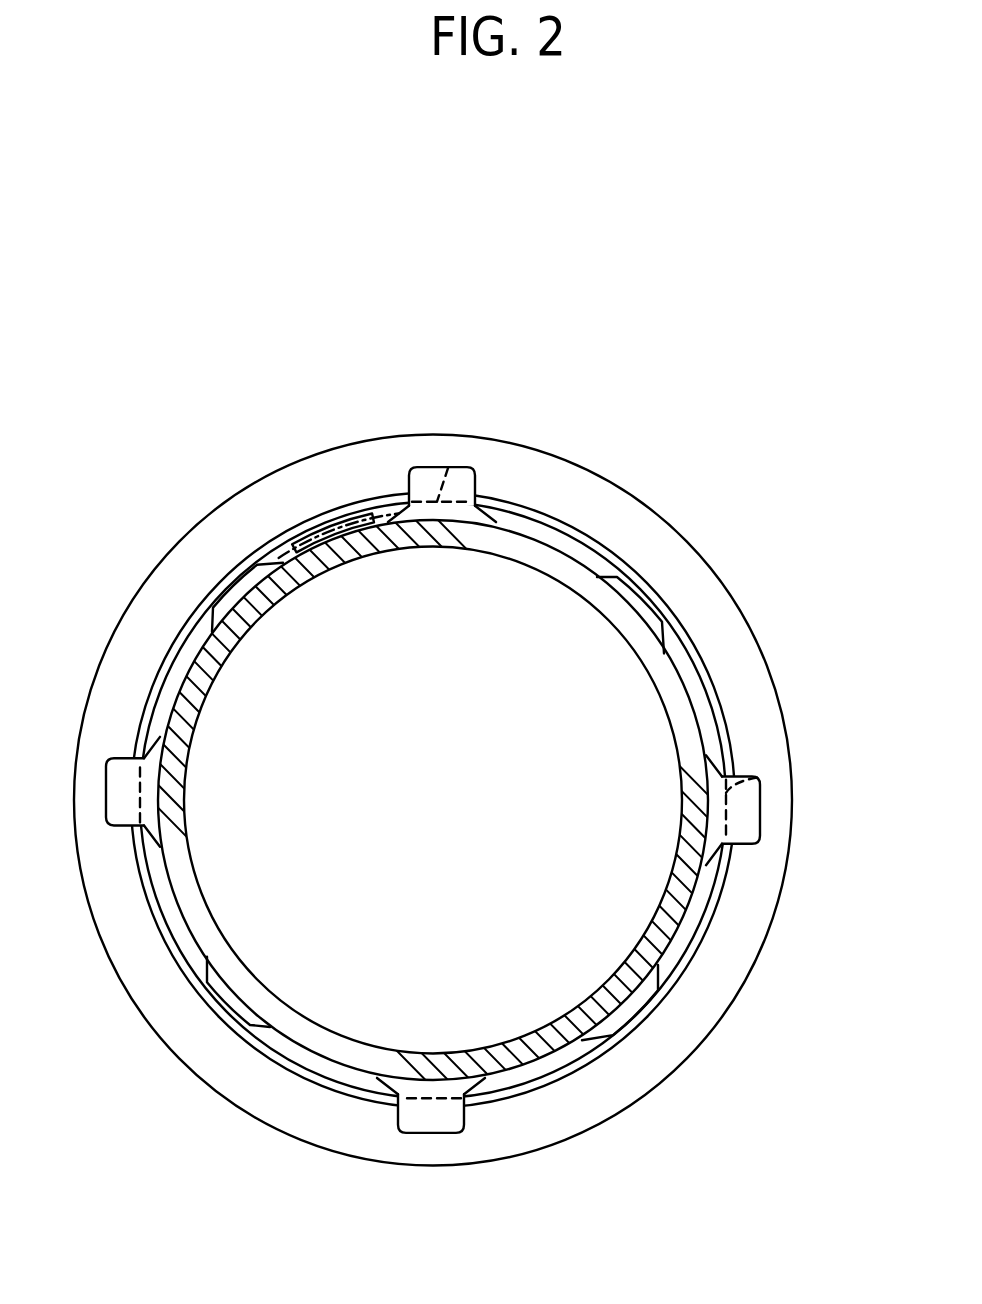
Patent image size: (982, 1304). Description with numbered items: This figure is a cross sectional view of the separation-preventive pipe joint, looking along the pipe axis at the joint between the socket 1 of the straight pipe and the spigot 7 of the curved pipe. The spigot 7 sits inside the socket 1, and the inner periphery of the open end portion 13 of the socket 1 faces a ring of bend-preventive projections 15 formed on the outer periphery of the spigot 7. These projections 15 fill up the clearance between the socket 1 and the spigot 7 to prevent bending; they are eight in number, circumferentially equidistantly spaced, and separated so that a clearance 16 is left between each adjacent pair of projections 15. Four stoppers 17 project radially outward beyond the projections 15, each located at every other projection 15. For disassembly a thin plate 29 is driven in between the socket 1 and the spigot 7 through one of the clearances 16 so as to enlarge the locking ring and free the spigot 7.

The socket 1 is at (600, 497).
The spigot 7 is at (193, 688).
The open end portion 13 is at (552, 520).
The bend-preventive projections 15 is at (250, 578).
The clearance 16 is at (386, 500).
The stoppers 17 is at (474, 468).
The thin plate 29 is at (335, 500).